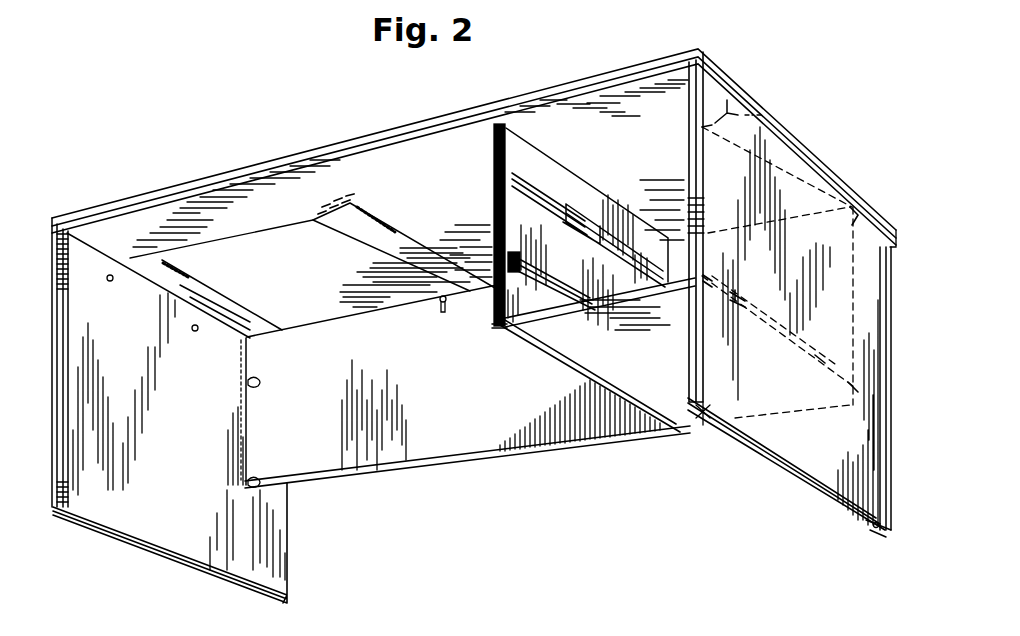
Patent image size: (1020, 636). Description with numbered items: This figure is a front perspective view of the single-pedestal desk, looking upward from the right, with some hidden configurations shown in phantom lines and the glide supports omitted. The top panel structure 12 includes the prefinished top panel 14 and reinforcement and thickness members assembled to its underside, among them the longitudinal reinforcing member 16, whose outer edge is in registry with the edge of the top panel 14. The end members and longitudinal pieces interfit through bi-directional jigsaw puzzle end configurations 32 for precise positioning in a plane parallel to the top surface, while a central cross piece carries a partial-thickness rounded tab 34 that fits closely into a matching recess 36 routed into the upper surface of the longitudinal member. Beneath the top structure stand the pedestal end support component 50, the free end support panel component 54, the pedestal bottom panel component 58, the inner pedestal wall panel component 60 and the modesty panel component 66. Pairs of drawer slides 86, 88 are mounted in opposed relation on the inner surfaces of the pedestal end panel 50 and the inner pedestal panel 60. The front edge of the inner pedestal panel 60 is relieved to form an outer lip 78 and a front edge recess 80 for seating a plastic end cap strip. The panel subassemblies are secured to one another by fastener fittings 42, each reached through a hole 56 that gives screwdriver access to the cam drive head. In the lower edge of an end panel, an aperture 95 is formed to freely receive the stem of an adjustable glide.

The top panel structure 12 is at (335, 141).
The top panel 14 is at (278, 160).
The longitudinal reinforcing member 16 is at (234, 199).
The jigsaw puzzle end configuration 32 is at (130, 257).
The rounded tab 34 is at (352, 196).
The recess 36 is at (313, 221).
The fitting 42 is at (440, 305).
The pedestal end support component 50 is at (776, 472).
The free end support panel component 54 is at (141, 548).
The hole 56 is at (145, 327).
The pedestal bottom panel component 58 is at (652, 418).
The inner pedestal wall panel component 60 is at (528, 232).
The modesty panel component 66 is at (460, 443).
The outer lip 78 is at (495, 314).
The front edge recess 80 is at (505, 327).
The drawer slide 86 is at (615, 207).
The drawer slide 88 is at (493, 174).
The aperture 95 is at (870, 528).